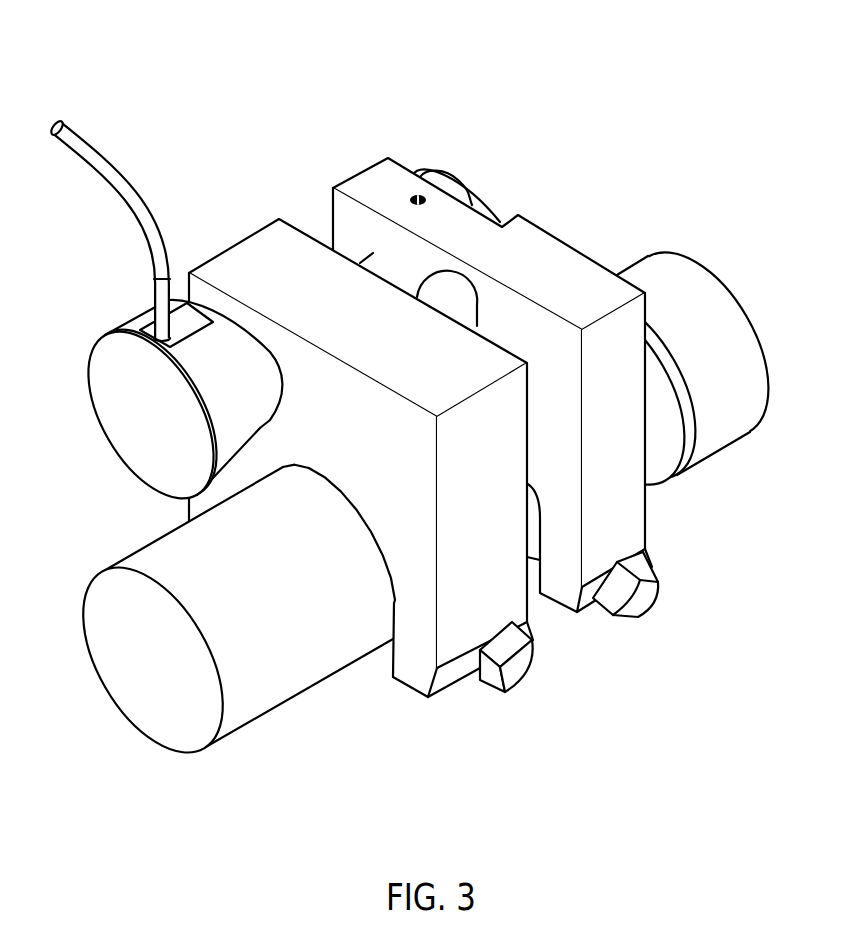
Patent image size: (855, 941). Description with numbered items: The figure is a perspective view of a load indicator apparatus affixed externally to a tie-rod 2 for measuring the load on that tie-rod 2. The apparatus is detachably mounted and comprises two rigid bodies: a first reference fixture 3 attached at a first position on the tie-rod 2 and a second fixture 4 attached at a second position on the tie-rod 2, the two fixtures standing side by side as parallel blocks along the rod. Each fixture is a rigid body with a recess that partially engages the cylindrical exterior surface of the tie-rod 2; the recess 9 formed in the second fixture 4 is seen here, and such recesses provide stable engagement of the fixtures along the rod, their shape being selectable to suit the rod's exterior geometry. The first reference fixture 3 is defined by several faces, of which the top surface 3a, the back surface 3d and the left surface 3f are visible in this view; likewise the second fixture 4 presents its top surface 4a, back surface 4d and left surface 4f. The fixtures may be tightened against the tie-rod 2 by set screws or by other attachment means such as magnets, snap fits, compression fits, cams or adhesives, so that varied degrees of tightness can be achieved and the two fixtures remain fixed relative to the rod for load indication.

The tie-rod 2 is at (148, 715).
The first reference fixture 3 is at (492, 336).
The top surface 3a is at (513, 238).
The back surface 3d is at (556, 586).
The left surface 3f is at (628, 531).
The second fixture 4 is at (350, 409).
The top surface 4a is at (252, 257).
The back surface 4d is at (420, 677).
The left surface 4f is at (453, 640).
The recess 9 is at (392, 627).